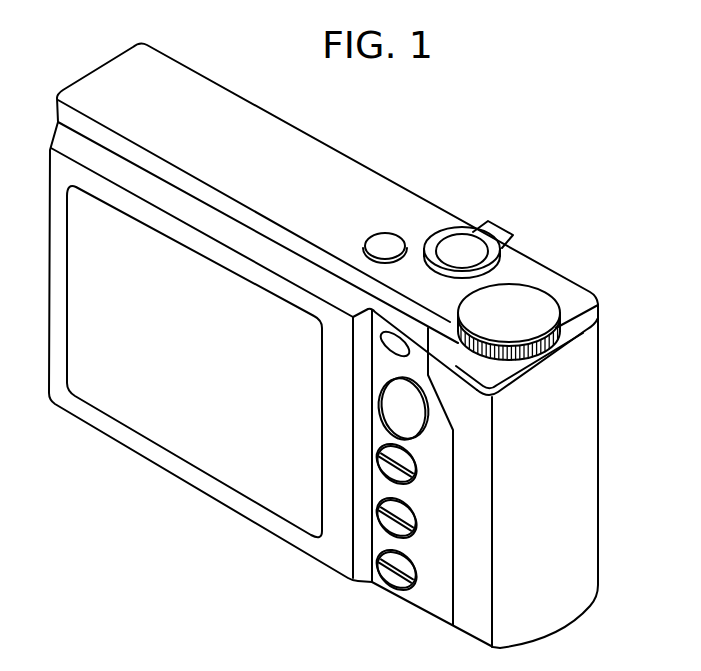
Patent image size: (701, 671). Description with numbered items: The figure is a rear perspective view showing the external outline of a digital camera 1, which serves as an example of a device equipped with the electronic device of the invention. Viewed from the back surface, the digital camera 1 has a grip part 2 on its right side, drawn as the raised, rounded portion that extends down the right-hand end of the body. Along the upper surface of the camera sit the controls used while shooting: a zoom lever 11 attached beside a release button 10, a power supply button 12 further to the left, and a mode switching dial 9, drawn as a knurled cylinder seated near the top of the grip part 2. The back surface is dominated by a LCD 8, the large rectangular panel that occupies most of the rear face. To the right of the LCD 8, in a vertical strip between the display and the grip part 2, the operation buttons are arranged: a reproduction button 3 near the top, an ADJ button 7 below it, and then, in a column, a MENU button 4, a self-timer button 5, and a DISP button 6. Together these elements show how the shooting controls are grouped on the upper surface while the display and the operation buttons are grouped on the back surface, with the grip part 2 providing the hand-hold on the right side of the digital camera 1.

The digital camera 1 is at (90, 72).
The grip part 2 is at (583, 498).
The reproduction button 3 is at (386, 346).
The MENU button 4 is at (400, 463).
The self-timer button 5 is at (400, 514).
The DISP button 6 is at (400, 568).
The ADJ button 7 is at (394, 408).
The LCD 8 is at (160, 425).
The mode switching dial 9 is at (528, 303).
The release button 10 is at (457, 243).
The zoom lever 11 is at (492, 233).
The power supply button 12 is at (380, 240).